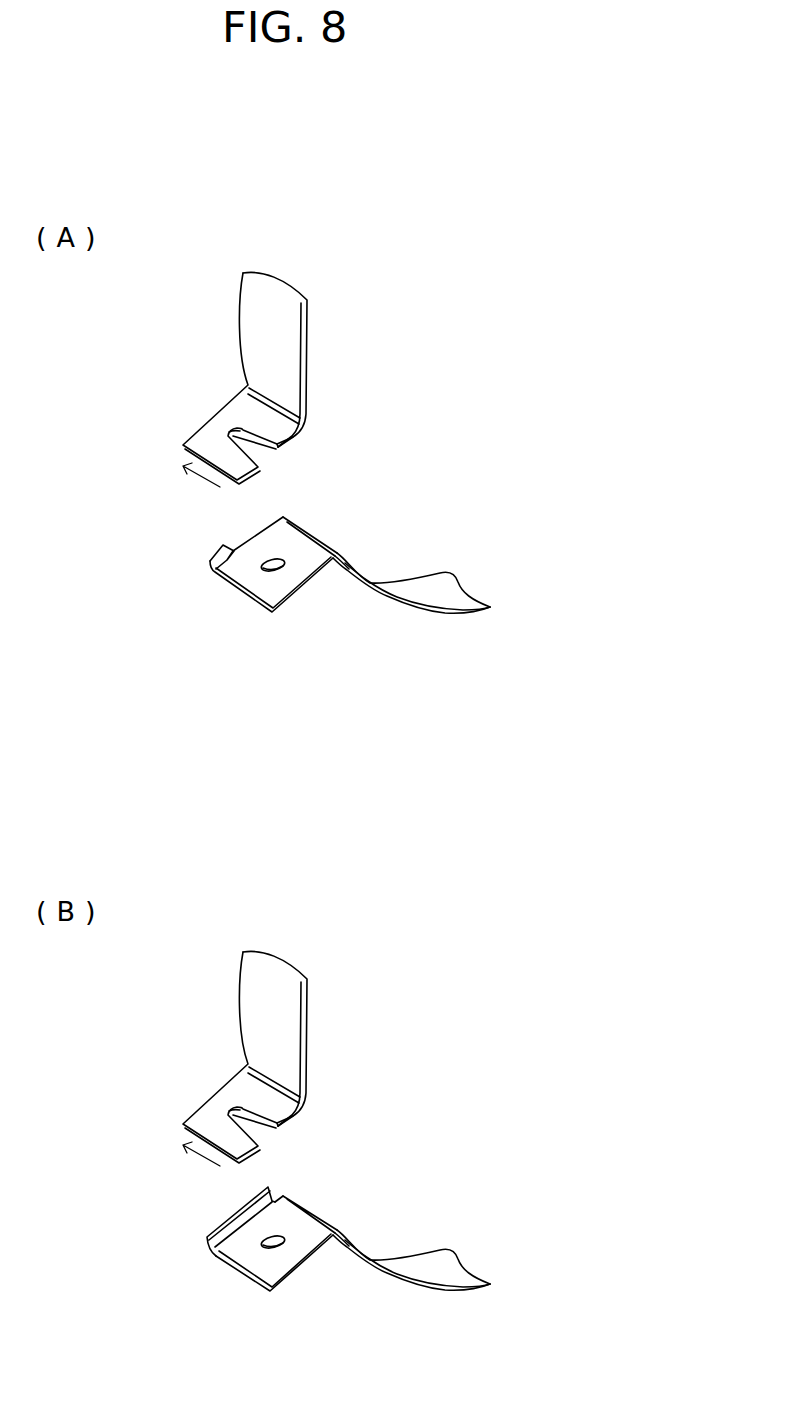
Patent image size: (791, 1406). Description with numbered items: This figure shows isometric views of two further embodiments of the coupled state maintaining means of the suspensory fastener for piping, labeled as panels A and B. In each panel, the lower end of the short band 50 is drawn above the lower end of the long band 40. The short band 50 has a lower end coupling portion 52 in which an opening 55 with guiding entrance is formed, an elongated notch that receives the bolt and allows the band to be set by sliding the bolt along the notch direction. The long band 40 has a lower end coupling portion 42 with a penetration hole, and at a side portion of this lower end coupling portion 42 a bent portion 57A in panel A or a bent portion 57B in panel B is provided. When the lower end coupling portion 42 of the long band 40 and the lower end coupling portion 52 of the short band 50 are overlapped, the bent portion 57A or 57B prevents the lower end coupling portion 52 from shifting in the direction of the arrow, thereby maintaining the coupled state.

The long band 40 is at (276, 902).
The lower end coupling portion 42 is at (288, 580).
The short band 50 is at (328, 354).
The lower end coupling portion 52 is at (247, 413).
The opening with guiding entrance 55 is at (232, 433).
The bent portion 57A is at (208, 556).
The bent portion 57B is at (213, 1230).